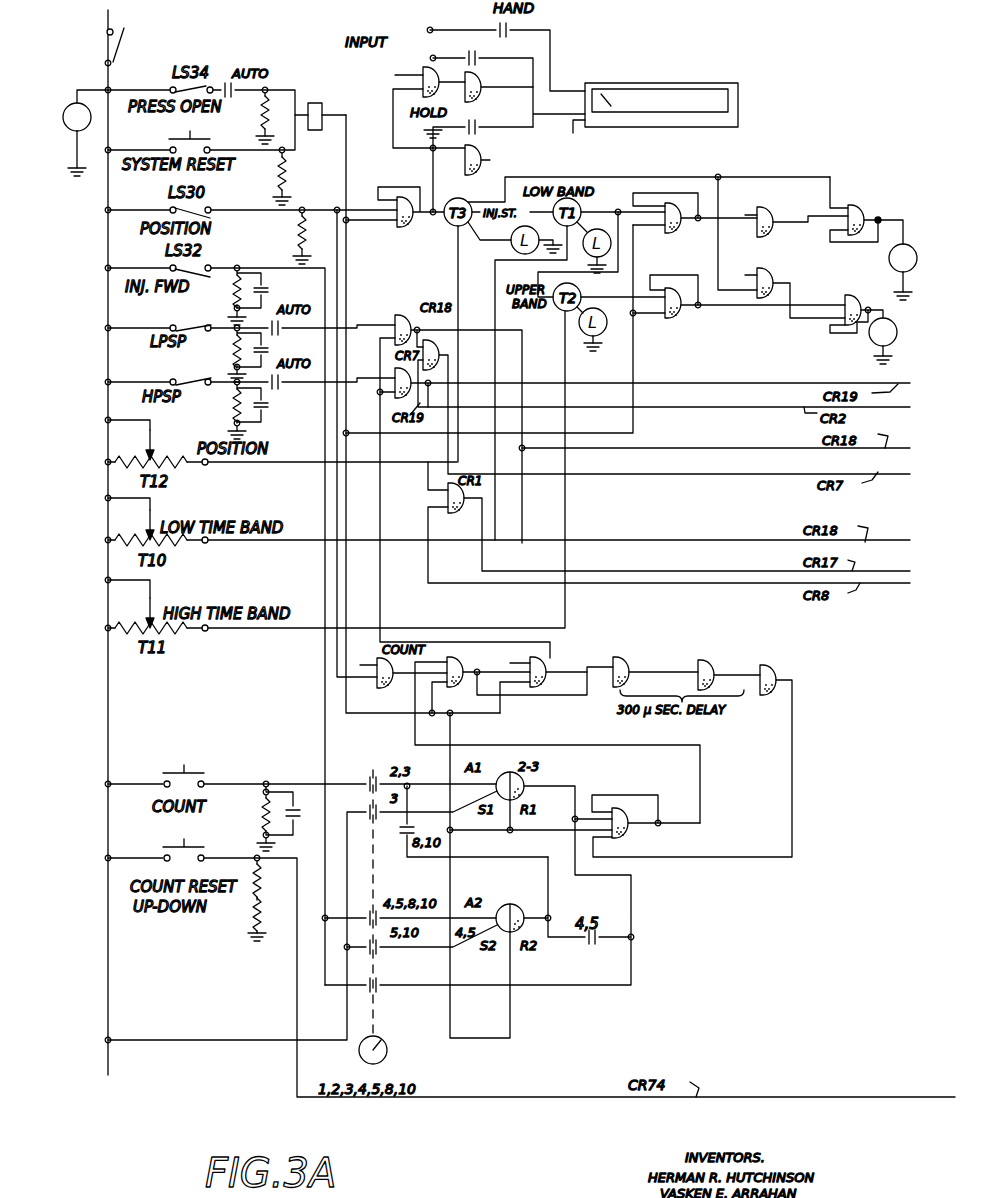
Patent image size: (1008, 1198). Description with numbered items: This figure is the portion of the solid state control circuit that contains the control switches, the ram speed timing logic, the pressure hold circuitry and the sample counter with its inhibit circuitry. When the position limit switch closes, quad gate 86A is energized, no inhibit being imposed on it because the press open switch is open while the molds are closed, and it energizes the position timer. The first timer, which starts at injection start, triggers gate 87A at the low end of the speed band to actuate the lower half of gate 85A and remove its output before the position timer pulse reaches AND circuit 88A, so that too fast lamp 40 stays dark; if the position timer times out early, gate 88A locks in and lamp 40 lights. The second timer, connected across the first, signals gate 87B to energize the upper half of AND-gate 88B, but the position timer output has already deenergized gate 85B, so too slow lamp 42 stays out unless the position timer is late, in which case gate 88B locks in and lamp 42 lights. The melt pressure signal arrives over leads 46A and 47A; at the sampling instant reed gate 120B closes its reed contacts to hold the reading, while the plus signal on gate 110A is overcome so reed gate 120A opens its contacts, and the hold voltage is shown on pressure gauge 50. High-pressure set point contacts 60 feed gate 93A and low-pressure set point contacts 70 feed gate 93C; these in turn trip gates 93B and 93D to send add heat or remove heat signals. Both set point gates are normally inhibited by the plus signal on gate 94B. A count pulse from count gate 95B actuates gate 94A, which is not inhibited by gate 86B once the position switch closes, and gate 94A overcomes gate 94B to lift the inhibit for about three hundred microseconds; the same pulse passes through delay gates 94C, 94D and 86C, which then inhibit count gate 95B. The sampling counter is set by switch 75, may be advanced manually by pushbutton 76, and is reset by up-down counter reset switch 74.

The too fast lamp 40 is at (889, 259).
The too slow lamp 42 is at (870, 341).
The lead 46A is at (484, 30).
The lead 47A is at (469, 58).
The pressure gauge 50 is at (698, 82).
The high-pressure set point contacts 60 is at (200, 378).
The low-pressure set point contacts 70 is at (200, 324).
The up-down counter reset switch 74 is at (236, 848).
The switch 75 is at (376, 1036).
The pushbutton 76 is at (201, 779).
The gate 85A is at (775, 212).
The gate 85B is at (775, 275).
The quad gate 86A is at (408, 229).
The gate 86B is at (386, 688).
The delay gate 86C is at (772, 667).
The gate 87A is at (690, 240).
The gate 87B is at (680, 318).
The AND circuit gate 88A is at (852, 206).
The AND-gate 88B is at (878, 290).
The high pressure set point gate 93A is at (393, 375).
The gate 93B is at (447, 494).
The low pressure set point gate 93C is at (394, 318).
The gate 93D is at (442, 352).
The gate 94A is at (475, 656).
The gate 94B is at (550, 666).
The delay gate 94C is at (645, 652).
The delay gate 94D is at (708, 662).
The count gate 95B is at (640, 795).
The gate 110A is at (428, 66).
The reed gate 120A is at (483, 90).
The reed gate 120B is at (484, 162).